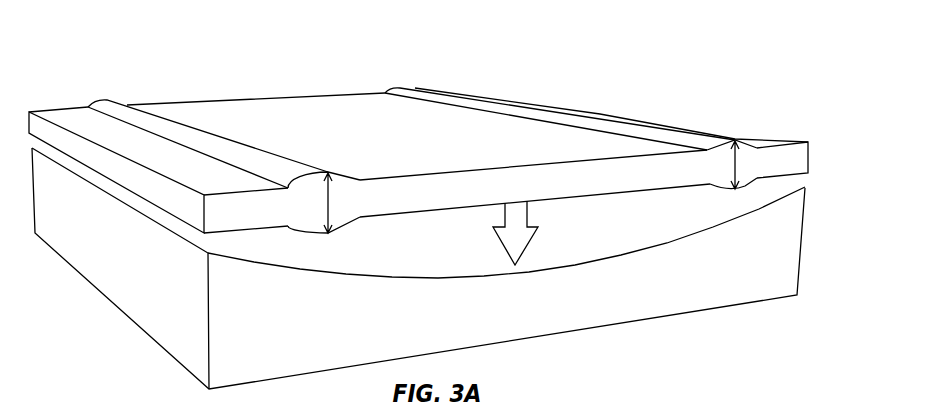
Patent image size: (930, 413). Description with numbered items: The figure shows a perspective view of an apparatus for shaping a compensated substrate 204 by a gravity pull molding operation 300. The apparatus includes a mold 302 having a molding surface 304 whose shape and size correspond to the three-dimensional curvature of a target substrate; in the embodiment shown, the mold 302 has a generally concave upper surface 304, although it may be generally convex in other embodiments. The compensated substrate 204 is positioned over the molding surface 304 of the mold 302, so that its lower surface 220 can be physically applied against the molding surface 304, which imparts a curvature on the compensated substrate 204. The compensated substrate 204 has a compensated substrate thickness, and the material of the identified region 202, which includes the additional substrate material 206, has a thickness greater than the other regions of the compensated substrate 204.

The gravity pull molding operation 300 is at (236, 71).
The identified region 202 is at (288, 214).
The compensated substrate 204 is at (446, 200).
The additional substrate material 206 is at (317, 170).
The lower surface 220 is at (393, 236).
The mold 302 is at (501, 316).
The molding surface 304 is at (645, 222).